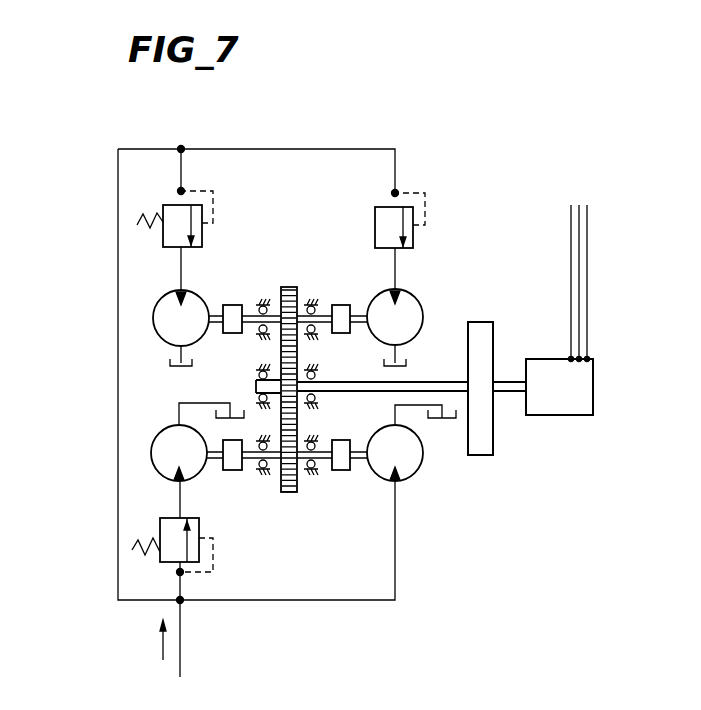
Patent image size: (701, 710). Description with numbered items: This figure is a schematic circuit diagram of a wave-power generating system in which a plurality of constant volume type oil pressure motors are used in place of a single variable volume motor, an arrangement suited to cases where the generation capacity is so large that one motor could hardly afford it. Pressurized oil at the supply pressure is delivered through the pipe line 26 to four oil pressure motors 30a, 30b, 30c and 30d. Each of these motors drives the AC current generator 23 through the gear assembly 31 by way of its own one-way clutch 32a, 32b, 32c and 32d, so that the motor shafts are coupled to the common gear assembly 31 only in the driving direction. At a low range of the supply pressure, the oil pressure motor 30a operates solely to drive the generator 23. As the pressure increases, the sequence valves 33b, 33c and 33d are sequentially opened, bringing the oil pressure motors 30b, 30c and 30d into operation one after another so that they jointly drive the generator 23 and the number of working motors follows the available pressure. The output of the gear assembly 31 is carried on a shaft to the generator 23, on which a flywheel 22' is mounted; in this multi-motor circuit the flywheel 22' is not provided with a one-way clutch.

The flywheel without a one way clutch 22' is at (511, 394).
The AC current generator 23 is at (580, 390).
The pipe line 26 is at (181, 639).
The oil pressure motor 30a is at (410, 460).
The oil pressure motor 30b is at (158, 458).
The oil pressure motor 30c is at (155, 320).
The oil pressure motor 30d is at (408, 312).
The gear assembly 31 is at (290, 287).
The one way clutch 32a is at (340, 470).
The one way clutch 32b is at (237, 470).
The one way clutch 32c is at (233, 305).
The one way clutch 32d is at (341, 305).
The sequence valve 33b is at (160, 556).
The sequence valve 33c is at (163, 207).
The sequence valve 33d is at (413, 244).